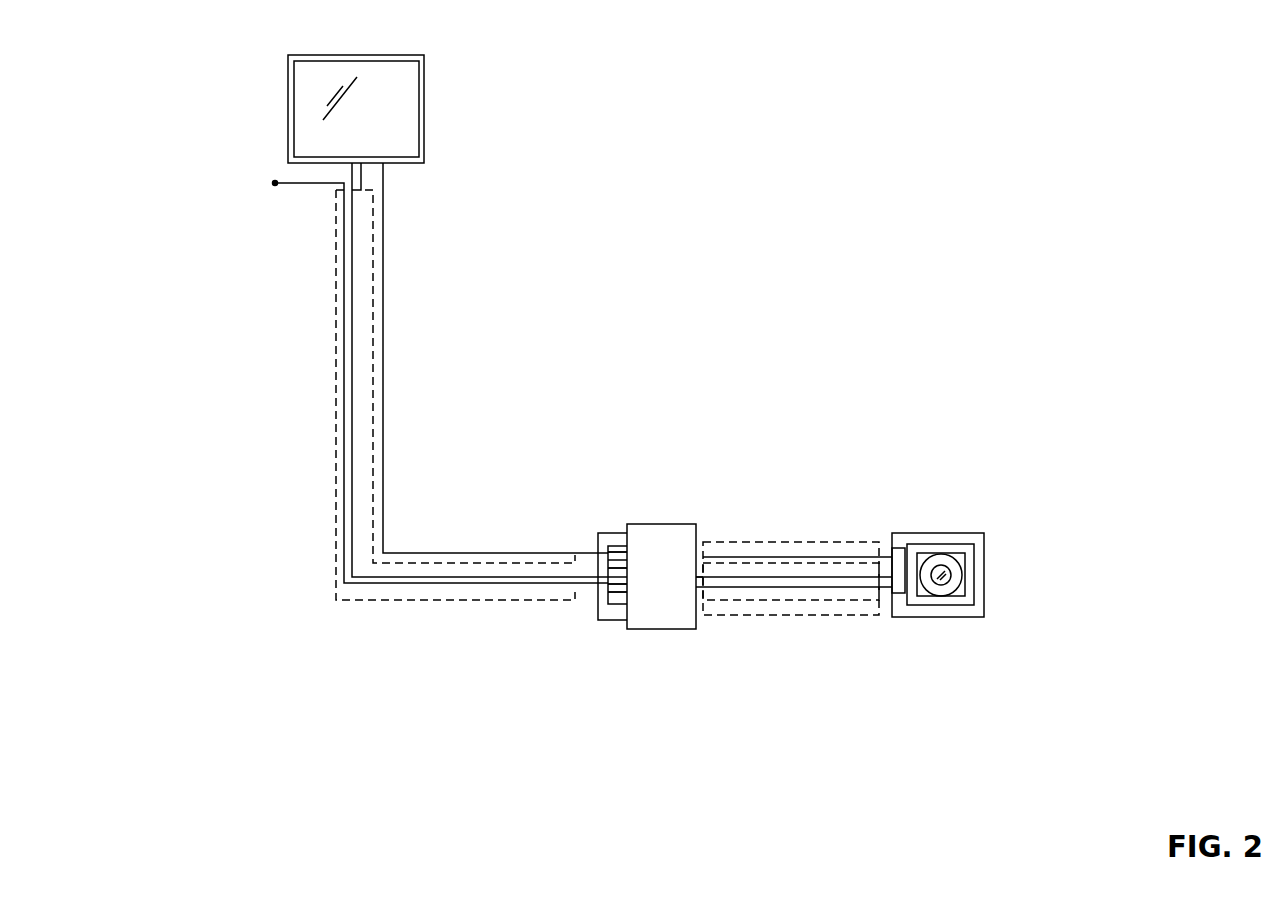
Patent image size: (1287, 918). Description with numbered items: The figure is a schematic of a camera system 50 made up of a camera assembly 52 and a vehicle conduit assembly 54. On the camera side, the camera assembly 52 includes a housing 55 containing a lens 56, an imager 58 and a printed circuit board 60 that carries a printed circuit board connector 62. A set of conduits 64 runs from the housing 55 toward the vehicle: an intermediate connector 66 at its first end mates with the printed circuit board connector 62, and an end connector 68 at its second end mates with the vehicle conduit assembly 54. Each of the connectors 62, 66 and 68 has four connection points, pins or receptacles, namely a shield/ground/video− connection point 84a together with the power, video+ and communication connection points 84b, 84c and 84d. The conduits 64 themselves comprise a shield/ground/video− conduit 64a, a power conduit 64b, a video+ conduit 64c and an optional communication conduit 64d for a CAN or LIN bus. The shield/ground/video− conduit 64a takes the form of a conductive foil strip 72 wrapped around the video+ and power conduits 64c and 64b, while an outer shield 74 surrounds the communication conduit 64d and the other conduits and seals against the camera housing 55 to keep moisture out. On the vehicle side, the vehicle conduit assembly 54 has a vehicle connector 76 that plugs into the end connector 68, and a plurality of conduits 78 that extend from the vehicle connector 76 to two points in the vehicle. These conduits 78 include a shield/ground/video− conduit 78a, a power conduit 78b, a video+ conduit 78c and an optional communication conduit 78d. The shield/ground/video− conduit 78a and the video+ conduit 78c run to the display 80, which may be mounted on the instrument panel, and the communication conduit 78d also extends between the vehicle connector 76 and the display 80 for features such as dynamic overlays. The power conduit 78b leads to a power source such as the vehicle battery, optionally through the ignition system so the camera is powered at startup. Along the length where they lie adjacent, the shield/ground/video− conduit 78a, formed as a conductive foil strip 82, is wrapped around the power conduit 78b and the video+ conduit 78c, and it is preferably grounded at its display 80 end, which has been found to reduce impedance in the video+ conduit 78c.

The camera system 50 is at (930, 79).
The camera assembly 52 is at (1002, 349).
The vehicle conduit assembly 54 is at (610, 254).
The housing 55 is at (985, 607).
The lens 56 is at (950, 575).
The imager 58 is at (960, 555).
The printed circuit board 60 is at (970, 550).
The printed circuit board connector 62 is at (905, 597).
The conduits 64 is at (829, 718).
The shield/ground/video− conduit 64a is at (745, 558).
The power conduit 64b is at (773, 590).
The video+ conduit 64c is at (788, 580).
The communication conduit 64d is at (785, 555).
The intermediate connector 66 is at (888, 545).
The end connector 68 is at (660, 524).
The conductive foil strip 72 is at (737, 563).
The outer shield 74 is at (812, 617).
The vehicle connector 76 is at (617, 640).
The conduits 78 is at (425, 202).
The shield/ground/video− conduit 78a is at (333, 227).
The power conduit 78b is at (336, 573).
The video+ conduit 78c is at (352, 408).
The communication conduit 78d is at (385, 315).
The display 80 is at (408, 122).
The conductive foil strip 82 is at (376, 229).
The shield/ground/video− connection point 84a is at (612, 572).
The connector pin 84b is at (612, 600).
The connector pin 84c is at (612, 590).
The connector pin 84d is at (612, 555).